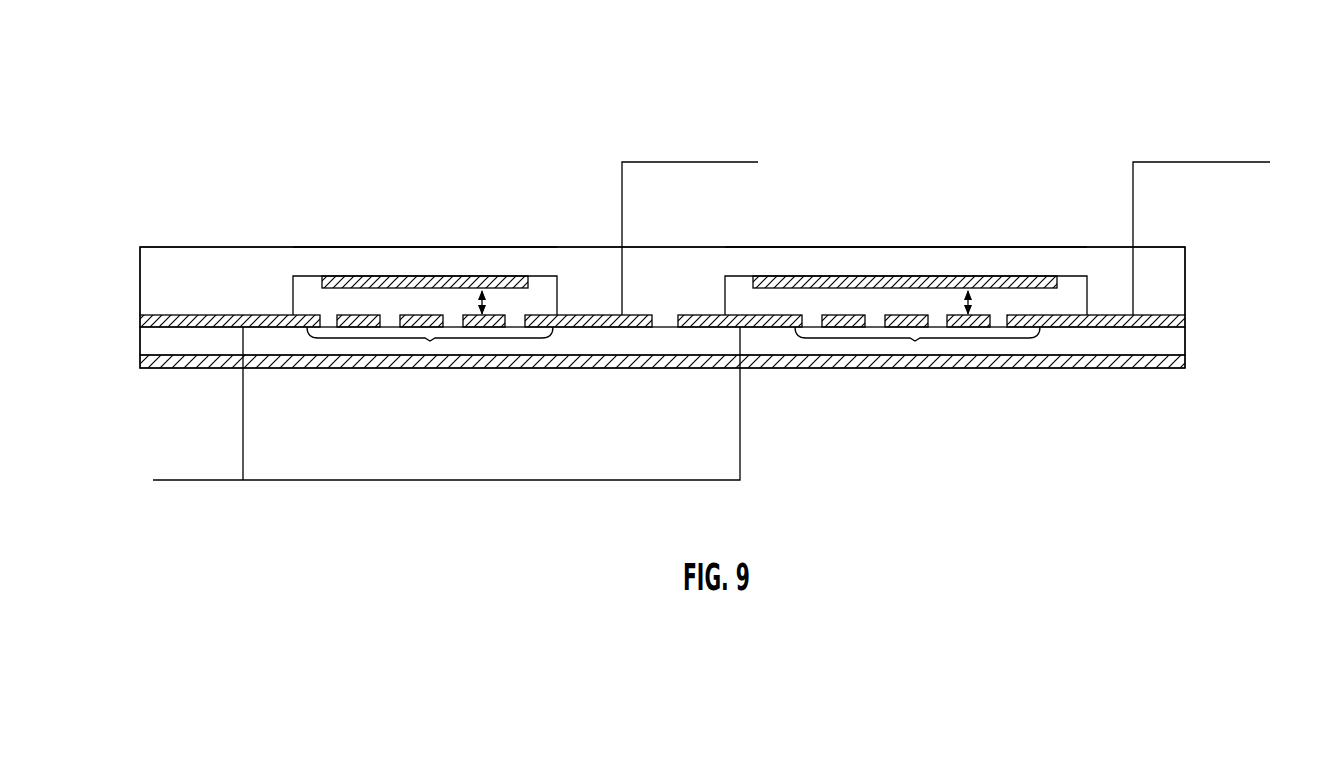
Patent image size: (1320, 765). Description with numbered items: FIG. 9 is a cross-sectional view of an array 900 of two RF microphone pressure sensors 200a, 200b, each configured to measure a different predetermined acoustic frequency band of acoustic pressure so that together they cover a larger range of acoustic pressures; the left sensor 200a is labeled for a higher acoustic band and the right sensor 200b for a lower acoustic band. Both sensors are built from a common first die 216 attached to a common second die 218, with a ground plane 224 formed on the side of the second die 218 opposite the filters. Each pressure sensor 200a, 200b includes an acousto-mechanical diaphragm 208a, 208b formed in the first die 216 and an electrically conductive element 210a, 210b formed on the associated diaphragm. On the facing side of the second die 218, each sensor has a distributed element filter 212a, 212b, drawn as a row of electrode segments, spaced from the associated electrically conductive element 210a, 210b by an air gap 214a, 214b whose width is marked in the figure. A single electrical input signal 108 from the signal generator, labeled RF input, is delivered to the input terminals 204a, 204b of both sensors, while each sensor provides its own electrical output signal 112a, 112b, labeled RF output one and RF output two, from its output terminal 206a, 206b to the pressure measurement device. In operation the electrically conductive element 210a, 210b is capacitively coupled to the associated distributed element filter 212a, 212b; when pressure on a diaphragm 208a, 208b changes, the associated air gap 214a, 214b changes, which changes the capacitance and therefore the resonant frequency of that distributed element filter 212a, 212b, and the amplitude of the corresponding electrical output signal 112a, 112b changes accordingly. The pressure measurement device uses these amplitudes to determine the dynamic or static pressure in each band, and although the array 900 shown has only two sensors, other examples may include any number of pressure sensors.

The array of pressure sensors 900 is at (877, 92).
The electrical input signal 108 is at (215, 482).
The electrical output signal 112a is at (677, 162).
The electrical output signal 112b is at (1163, 162).
The pressure sensor 200a is at (438, 188).
The pressure sensor 200b is at (923, 188).
The input terminal 204a is at (181, 315).
The input terminal 204b is at (697, 313).
The output terminal 206a is at (588, 314).
The output terminal 206b is at (1162, 315).
The acousto-mechanical diaphragm 208a is at (537, 245).
The acousto-mechanical diaphragm 208b is at (1020, 245).
The electrically conductive element 210a is at (322, 283).
The electrically conductive element 210b is at (753, 284).
The distributed element filter 212a is at (430, 341).
The distributed element filter 212b is at (915, 341).
The air gap 214a is at (540, 300).
The air gap 214b is at (1023, 300).
The first die 216 is at (1185, 262).
The second die 218 is at (1185, 340).
The ground plane 224 is at (1185, 360).